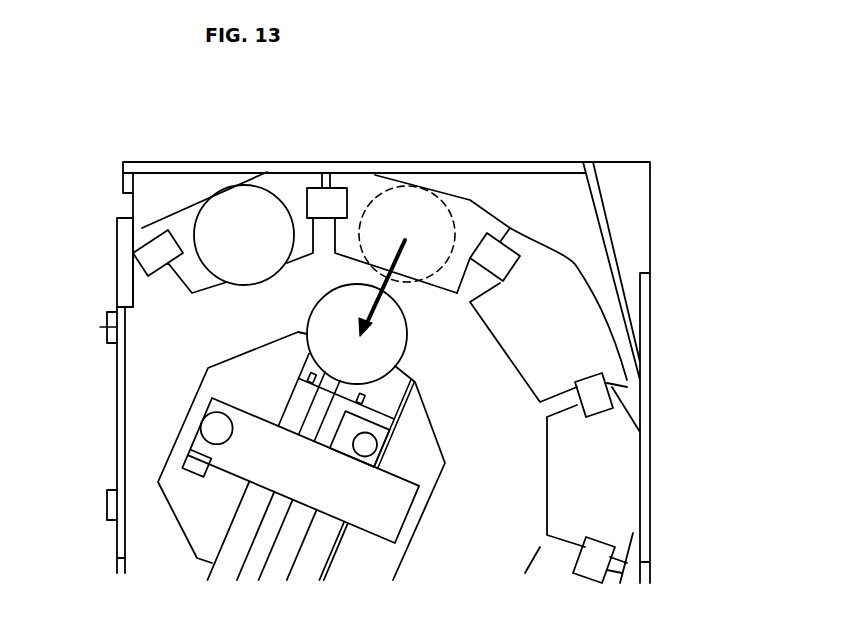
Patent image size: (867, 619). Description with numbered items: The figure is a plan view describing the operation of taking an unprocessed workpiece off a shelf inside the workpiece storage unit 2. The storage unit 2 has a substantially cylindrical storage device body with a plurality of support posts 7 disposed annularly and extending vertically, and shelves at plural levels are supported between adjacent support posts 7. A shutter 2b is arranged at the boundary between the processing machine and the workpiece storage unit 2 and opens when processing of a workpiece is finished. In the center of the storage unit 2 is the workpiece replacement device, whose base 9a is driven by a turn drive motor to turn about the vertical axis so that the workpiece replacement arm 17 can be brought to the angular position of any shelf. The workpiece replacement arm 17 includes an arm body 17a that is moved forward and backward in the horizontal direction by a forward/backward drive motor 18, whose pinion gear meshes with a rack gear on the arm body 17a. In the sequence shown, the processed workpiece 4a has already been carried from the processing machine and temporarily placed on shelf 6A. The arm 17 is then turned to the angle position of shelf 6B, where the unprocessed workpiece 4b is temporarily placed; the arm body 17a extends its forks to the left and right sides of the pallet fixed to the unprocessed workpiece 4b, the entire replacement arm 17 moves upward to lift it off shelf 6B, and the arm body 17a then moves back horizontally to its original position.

The workpiece storage unit 2 is at (651, 238).
The shutter 2b is at (117, 425).
The processed workpiece 4a is at (235, 205).
The unprocessed workpiece 4b is at (428, 302).
The shelf 6A is at (178, 212).
The shelf 6B is at (360, 195).
The support post 7 is at (597, 398).
The base 9a is at (252, 352).
The workpiece replacement arm 17 is at (345, 545).
The arm body 17a is at (300, 392).
The forward/backward drive motor 18 is at (365, 445).